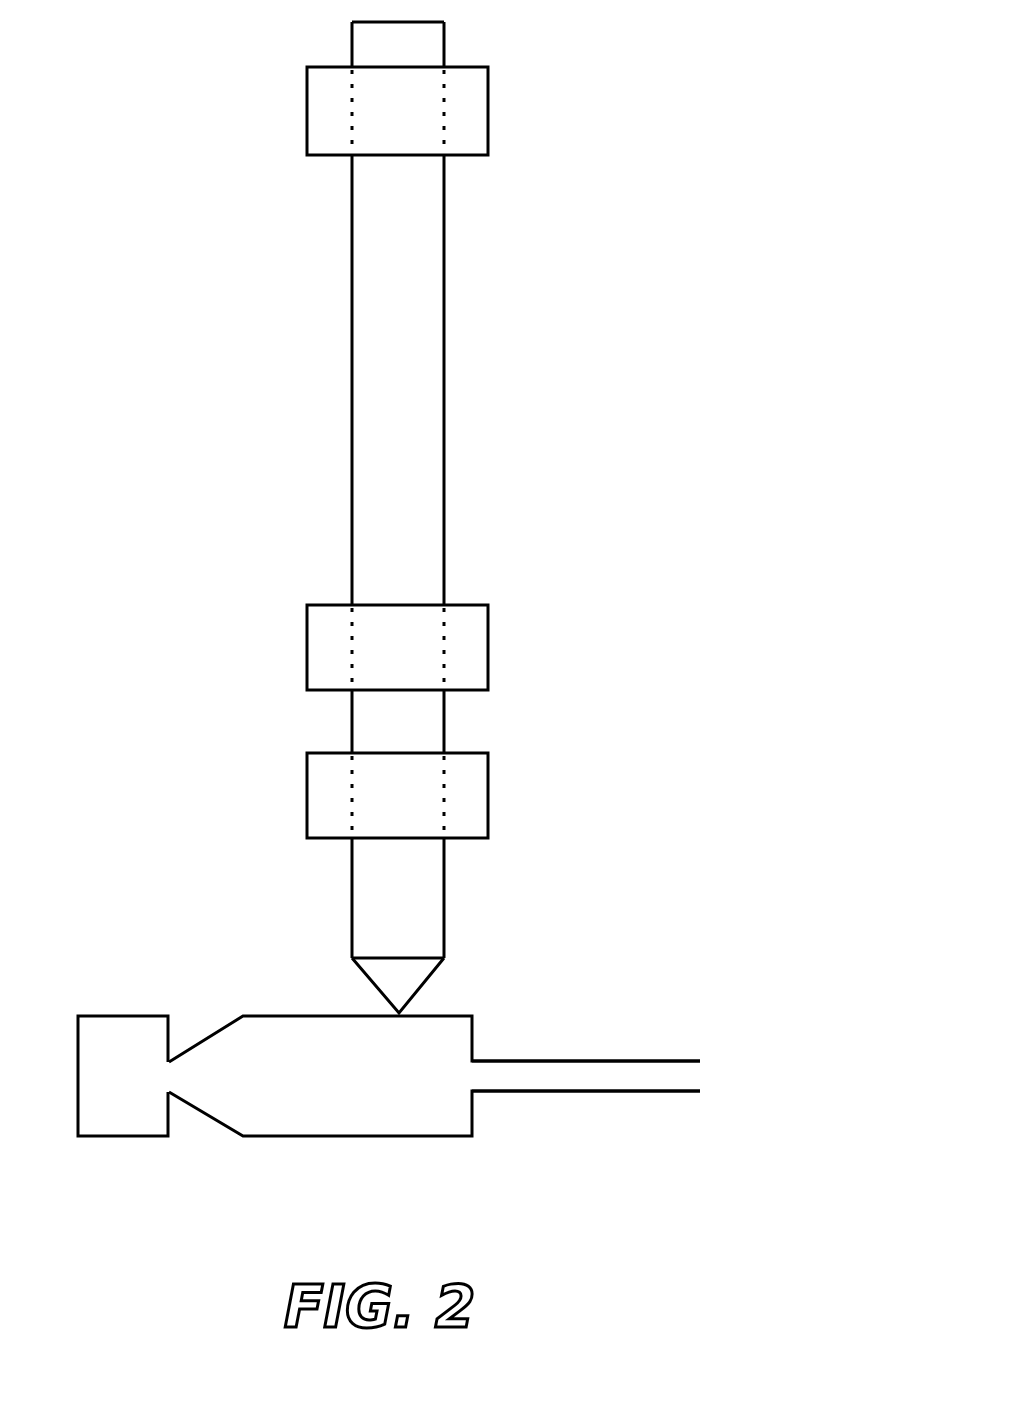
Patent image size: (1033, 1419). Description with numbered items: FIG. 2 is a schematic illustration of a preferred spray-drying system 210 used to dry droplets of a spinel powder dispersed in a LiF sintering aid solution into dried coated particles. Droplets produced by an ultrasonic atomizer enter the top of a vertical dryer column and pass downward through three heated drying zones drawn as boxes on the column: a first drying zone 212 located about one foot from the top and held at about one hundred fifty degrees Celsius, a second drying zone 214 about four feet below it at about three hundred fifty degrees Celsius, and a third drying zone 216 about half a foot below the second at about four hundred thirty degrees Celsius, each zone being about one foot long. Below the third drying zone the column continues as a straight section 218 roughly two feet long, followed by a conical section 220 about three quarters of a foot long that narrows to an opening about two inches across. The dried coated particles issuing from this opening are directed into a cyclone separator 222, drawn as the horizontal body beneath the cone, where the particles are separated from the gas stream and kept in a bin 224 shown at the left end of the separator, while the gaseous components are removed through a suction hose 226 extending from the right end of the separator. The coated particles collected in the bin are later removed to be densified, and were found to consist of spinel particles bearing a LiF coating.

The laser welding system 210 is at (562, 320).
The first lens / optical element 212 is at (488, 88).
The second lens / optical element 214 is at (488, 624).
The third lens / optical element 216 is at (488, 793).
The laser beam 218 is at (444, 882).
The focused beam spot 220 is at (424, 985).
The workpiece body 222 is at (290, 1136).
The end block 224 is at (122, 1016).
The tube / pipe 226 is at (627, 1091).